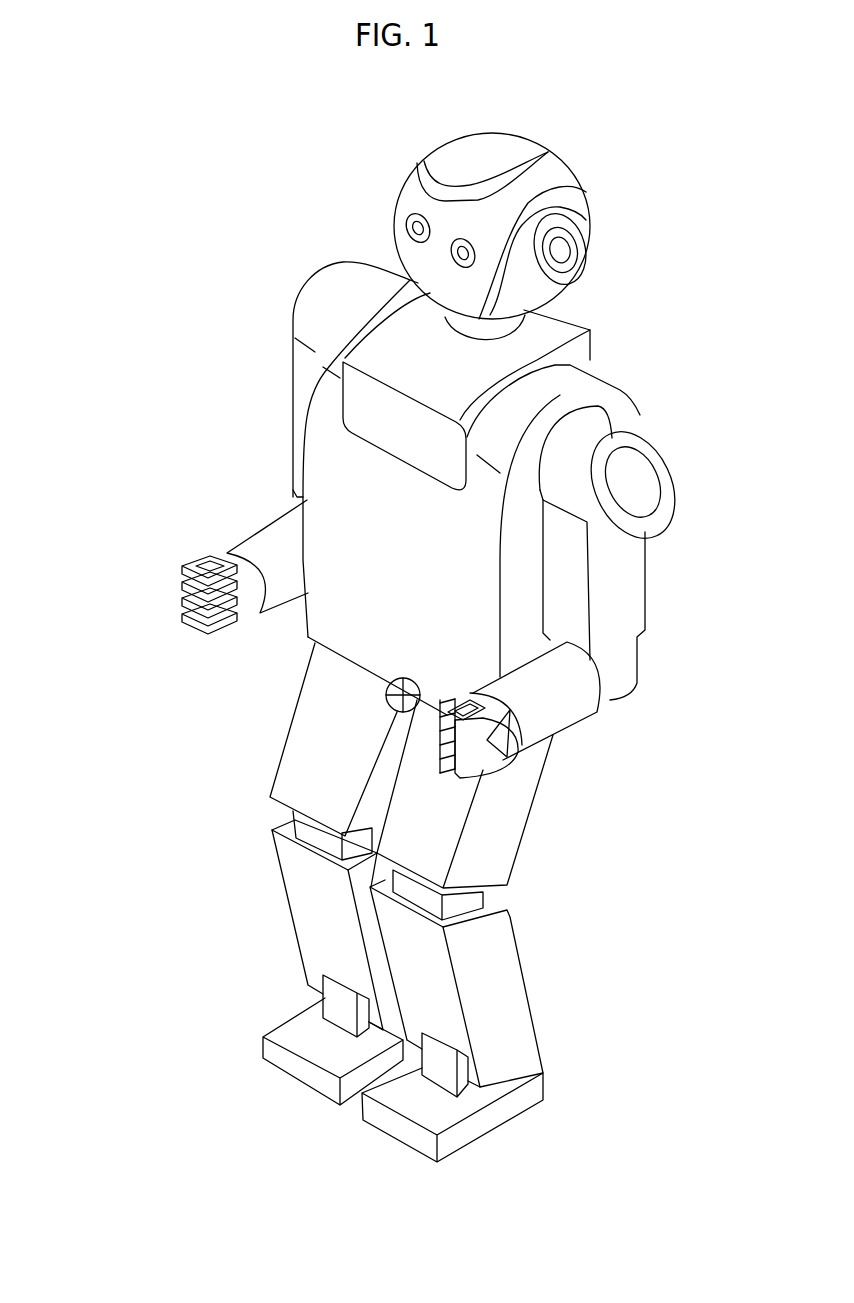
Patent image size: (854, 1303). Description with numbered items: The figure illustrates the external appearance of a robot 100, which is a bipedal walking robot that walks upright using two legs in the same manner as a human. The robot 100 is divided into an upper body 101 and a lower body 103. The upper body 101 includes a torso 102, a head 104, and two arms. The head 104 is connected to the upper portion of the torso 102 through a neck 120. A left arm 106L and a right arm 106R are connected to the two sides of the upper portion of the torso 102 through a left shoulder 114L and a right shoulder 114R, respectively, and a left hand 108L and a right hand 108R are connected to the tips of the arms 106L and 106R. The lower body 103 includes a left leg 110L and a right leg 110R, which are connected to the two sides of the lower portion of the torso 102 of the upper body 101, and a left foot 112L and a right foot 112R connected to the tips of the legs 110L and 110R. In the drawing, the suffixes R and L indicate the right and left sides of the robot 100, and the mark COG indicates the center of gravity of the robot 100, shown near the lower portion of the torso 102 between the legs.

The robot 100 is at (396, 92).
The upper body 101 is at (198, 361).
The torso 102 is at (338, 473).
The lower body 103 is at (233, 812).
The head 104 is at (397, 200).
The right arm 106R is at (247, 542).
The left arm 106L is at (623, 653).
The right hand 108R is at (183, 590).
The left hand 108L is at (483, 760).
The right leg 110R is at (300, 910).
The left leg 110L is at (513, 985).
The right foot 112R is at (270, 1052).
The left foot 112L is at (487, 1118).
The right shoulder 114R is at (315, 295).
The left shoulder 114L is at (633, 433).
The neck 120 is at (513, 325).
The center of gravity COG is at (386, 694).